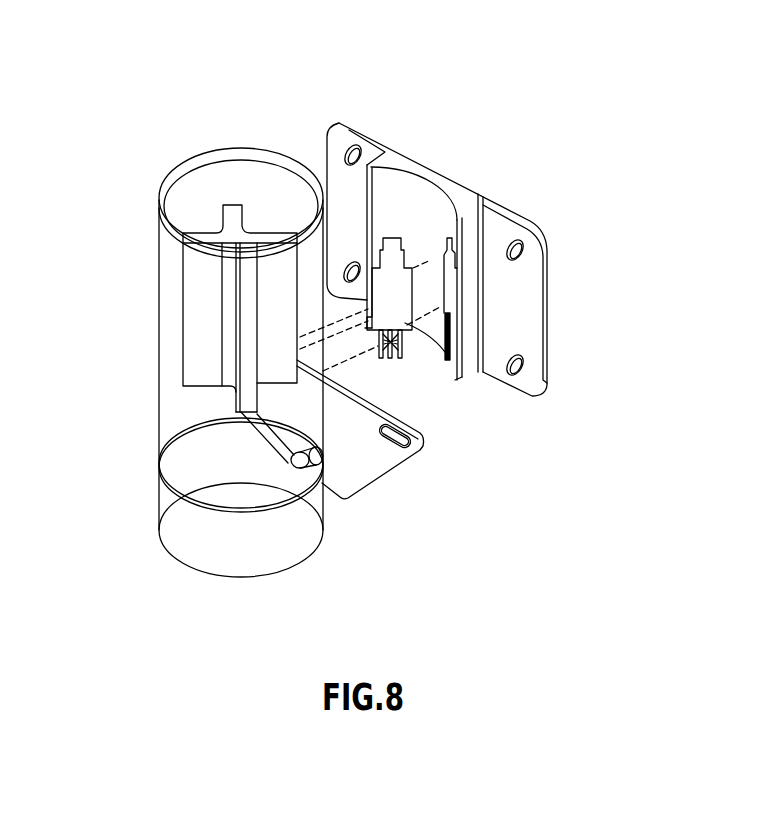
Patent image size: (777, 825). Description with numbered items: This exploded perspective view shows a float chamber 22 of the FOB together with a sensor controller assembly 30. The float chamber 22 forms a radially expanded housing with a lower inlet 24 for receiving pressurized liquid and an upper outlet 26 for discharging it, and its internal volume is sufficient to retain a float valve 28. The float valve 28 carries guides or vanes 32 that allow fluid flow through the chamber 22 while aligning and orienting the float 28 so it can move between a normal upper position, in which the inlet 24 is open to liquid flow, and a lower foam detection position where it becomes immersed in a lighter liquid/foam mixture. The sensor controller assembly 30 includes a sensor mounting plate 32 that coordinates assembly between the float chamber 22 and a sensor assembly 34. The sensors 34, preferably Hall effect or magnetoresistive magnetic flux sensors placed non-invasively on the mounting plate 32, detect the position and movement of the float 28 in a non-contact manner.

The float chamber 22 is at (314, 554).
The lower inlet 24 is at (243, 578).
The upper outlet 26 is at (237, 190).
The float valve 28 is at (183, 338).
The sensor controller assembly 30 is at (559, 103).
The guides or vanes / sensor mounting plate 32 is at (248, 202).
The sensor assembly 34 is at (402, 344).